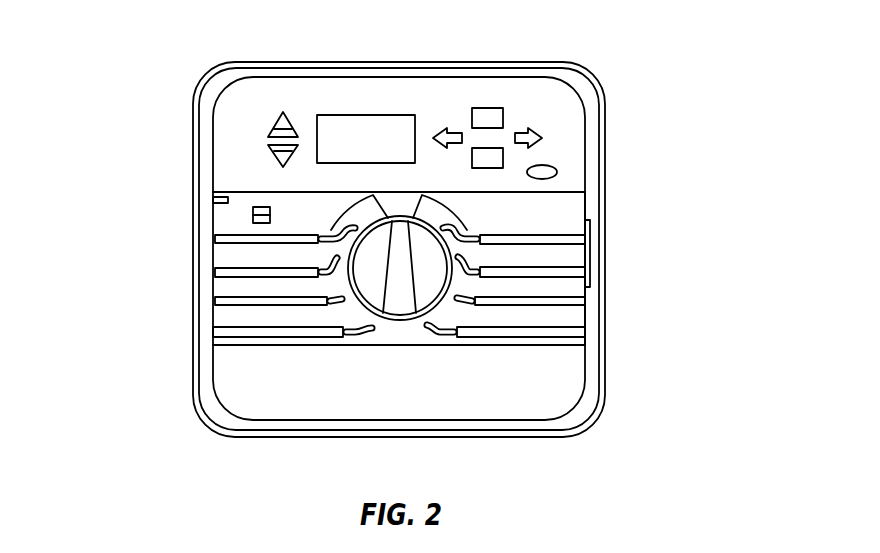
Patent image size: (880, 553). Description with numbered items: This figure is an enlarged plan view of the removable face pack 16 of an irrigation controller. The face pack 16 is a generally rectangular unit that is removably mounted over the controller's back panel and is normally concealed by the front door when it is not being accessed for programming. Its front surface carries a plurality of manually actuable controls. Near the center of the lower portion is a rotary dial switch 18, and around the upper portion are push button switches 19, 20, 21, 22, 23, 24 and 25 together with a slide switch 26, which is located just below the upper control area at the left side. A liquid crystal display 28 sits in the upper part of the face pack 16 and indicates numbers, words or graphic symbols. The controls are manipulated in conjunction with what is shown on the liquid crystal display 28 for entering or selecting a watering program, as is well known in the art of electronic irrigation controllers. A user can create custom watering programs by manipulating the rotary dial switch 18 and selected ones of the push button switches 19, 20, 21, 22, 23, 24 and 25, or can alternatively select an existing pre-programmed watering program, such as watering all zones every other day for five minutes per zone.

The face pack 16 is at (578, 128).
The rotary dial switch 18 is at (400, 298).
The push button switch 19 is at (442, 128).
The push button switch 20 is at (537, 130).
The push button switch 21 is at (272, 128).
The push button switch 22 is at (270, 150).
The push button switch 23 is at (483, 108).
The push button switch 24 is at (482, 156).
The push button switch 25 is at (557, 170).
The slide switch 26 is at (253, 218).
The liquid crystal display 28 is at (340, 126).